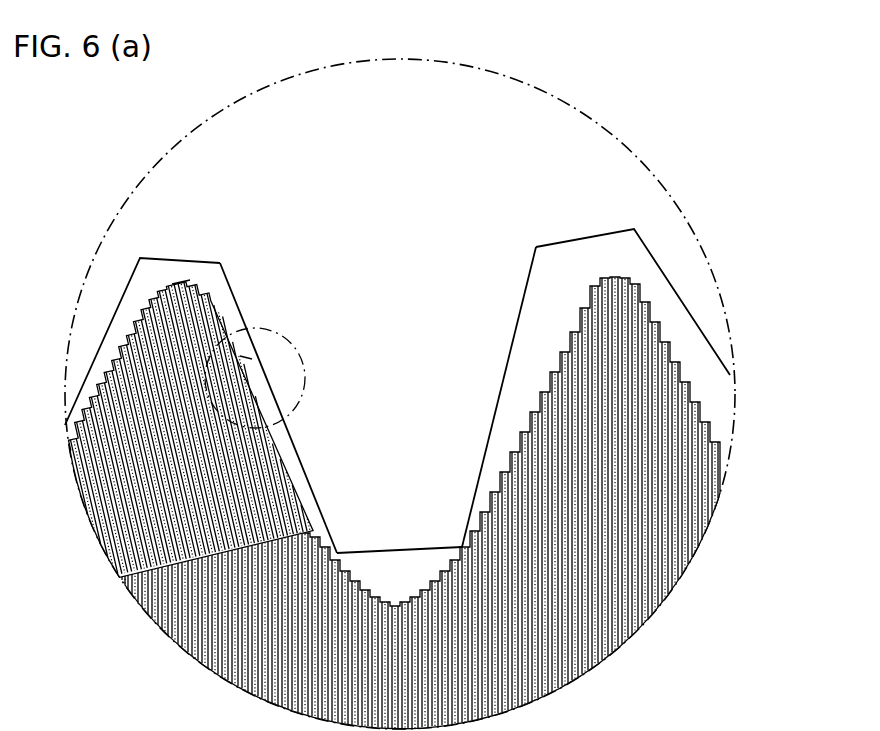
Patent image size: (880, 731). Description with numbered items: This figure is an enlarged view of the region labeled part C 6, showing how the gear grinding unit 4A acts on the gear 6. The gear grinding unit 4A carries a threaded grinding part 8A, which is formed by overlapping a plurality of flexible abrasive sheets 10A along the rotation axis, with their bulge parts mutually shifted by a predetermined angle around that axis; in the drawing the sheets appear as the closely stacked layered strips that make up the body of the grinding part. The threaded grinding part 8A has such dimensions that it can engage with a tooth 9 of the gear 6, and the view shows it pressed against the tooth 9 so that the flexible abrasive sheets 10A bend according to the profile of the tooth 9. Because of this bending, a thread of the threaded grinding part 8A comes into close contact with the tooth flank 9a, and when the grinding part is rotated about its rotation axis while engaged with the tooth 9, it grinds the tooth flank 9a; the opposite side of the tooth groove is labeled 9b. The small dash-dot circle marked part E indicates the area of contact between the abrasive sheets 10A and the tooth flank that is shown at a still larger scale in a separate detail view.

The gear 6 is at (492, 97).
The part C is at (588, 115).
The gear grinding unit 4A is at (632, 272).
The threaded grinding part 8A is at (145, 315).
The flexible abrasive sheets 10A is at (186, 282).
The tooth 9 is at (404, 396).
The tooth flank 9a is at (230, 292).
The second flank of tooth groove 9b is at (503, 386).
The part E is at (309, 344).